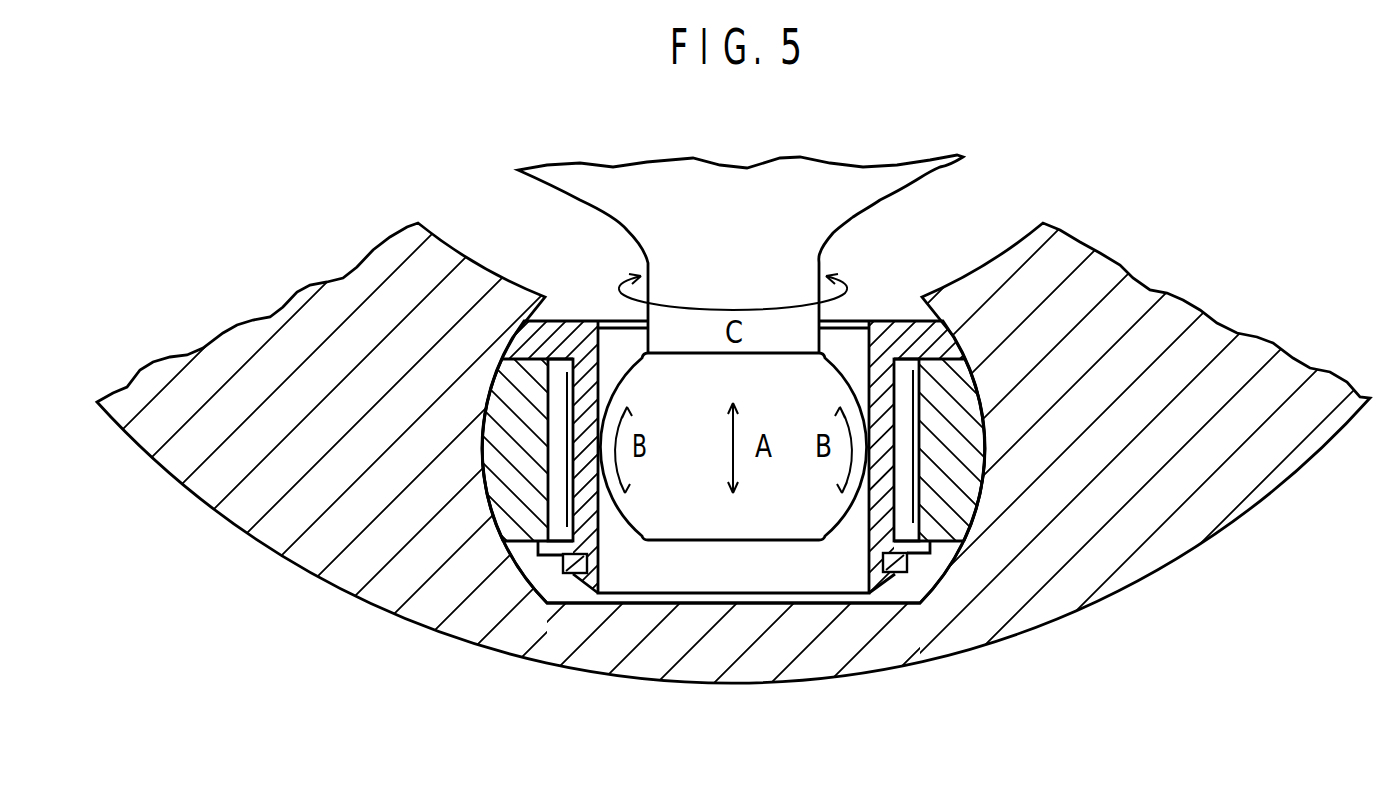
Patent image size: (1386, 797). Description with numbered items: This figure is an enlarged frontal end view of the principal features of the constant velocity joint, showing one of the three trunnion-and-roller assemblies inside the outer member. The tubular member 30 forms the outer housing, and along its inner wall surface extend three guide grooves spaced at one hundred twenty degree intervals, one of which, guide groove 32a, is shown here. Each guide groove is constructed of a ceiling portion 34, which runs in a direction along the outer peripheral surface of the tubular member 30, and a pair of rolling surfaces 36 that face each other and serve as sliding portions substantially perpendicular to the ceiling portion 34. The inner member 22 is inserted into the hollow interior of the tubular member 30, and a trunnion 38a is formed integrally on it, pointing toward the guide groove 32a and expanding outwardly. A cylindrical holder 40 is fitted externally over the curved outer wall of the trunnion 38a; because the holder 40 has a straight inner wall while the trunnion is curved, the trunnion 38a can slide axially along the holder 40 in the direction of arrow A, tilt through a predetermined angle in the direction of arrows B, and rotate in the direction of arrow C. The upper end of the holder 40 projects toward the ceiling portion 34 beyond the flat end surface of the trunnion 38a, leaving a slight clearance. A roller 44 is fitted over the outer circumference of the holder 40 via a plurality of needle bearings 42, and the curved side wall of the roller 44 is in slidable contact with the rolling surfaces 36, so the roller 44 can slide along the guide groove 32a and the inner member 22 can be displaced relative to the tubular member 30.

The inner member 22 is at (797, 183).
The tubular member 30 is at (394, 570).
The guide groove 32a is at (606, 573).
The ceiling portion 34 is at (585, 598).
The rolling surfaces 36 is at (532, 578).
The trunnion 38a is at (722, 525).
The holder 40 is at (900, 330).
The needle bearings 42 is at (905, 518).
The roller 44 is at (962, 508).